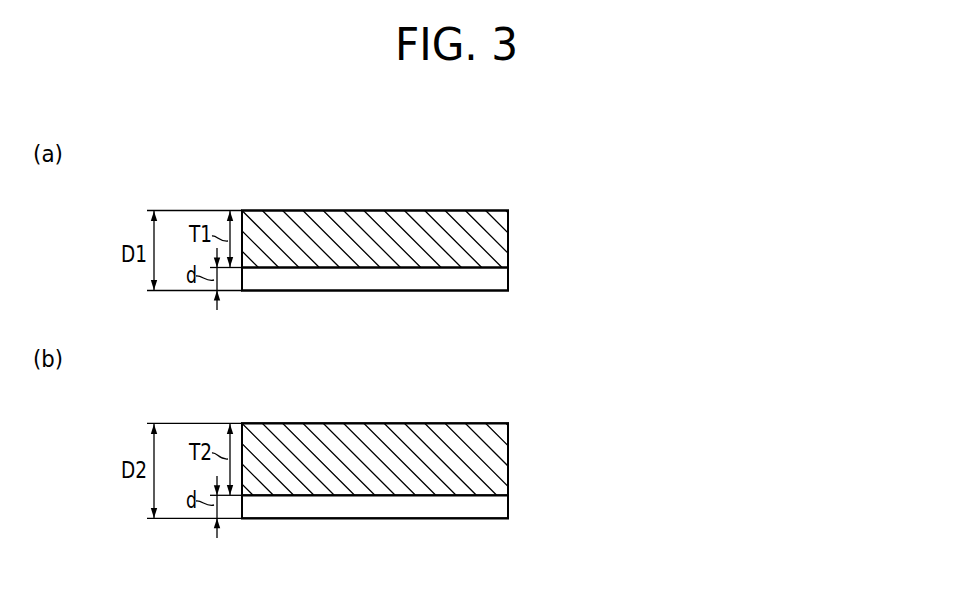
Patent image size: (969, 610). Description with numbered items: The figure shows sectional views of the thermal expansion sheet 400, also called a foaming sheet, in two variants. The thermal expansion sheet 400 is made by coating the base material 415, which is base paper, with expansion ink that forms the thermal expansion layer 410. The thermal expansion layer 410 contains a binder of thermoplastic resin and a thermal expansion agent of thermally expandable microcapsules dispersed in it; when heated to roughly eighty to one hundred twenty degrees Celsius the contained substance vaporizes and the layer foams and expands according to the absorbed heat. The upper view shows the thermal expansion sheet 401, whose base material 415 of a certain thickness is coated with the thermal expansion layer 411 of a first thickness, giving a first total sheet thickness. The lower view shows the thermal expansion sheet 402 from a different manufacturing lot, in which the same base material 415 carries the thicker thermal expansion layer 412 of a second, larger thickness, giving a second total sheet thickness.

The thermal expansion sheet 400 is at (541, 214).
The thermal expansion sheet 401 is at (541, 214).
The thermal expansion layer 410 is at (541, 238).
The thermal expansion layer 411 is at (492, 240).
The base material 415 is at (490, 280).
The thermal expansion sheet 402 is at (384, 433).
The thermal expansion layer 412 is at (492, 452).